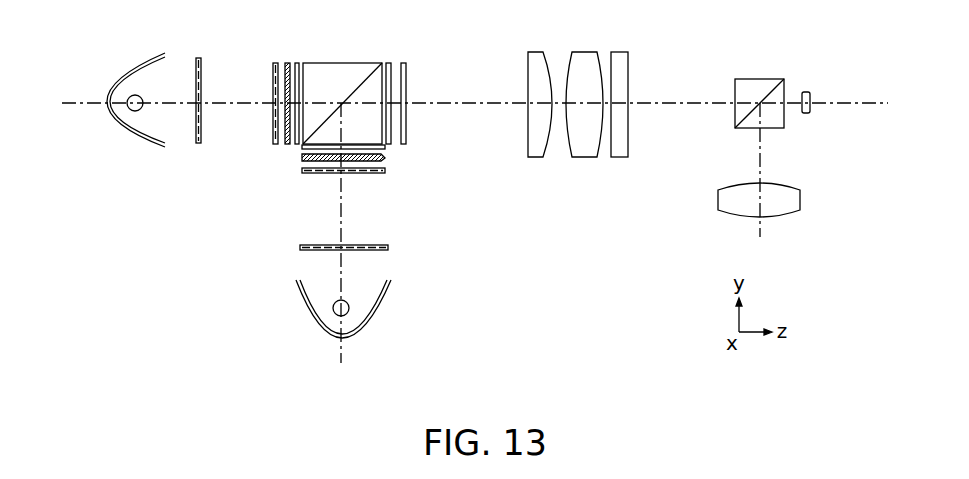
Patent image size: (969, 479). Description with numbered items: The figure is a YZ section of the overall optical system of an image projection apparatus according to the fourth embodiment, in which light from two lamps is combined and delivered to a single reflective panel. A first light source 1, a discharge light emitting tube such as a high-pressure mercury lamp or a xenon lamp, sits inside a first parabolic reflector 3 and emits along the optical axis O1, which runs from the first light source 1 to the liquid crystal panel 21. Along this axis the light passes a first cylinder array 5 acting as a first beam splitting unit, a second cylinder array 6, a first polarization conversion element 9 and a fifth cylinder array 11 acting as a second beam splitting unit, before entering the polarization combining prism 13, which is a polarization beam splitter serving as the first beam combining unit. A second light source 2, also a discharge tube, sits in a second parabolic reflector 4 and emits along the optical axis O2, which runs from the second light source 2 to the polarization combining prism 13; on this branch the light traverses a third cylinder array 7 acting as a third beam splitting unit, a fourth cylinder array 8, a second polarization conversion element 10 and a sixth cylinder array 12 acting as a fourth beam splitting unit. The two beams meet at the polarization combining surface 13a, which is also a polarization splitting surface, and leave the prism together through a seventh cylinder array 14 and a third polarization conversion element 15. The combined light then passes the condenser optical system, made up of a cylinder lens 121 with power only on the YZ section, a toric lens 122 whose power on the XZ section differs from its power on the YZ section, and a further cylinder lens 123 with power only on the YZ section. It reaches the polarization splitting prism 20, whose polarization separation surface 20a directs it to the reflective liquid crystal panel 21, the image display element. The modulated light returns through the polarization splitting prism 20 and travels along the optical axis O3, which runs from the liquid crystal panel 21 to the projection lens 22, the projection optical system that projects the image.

The first light source 1 is at (133, 111).
The second light source 2 is at (349, 309).
The first parabolic reflector 3 is at (160, 146).
The second parabolic reflector 4 is at (390, 290).
The first cylinder array 5 is at (198, 58).
The second cylinder array 6 is at (275, 63).
The third cylinder array 7 is at (388, 247).
The fourth cylinder array 8 is at (385, 171).
The first polarization conversion element 9 is at (287, 63).
The second polarization conversion element 10 is at (385, 158).
The fifth cylinder array 11 is at (297, 63).
The sixth cylinder array 12 is at (385, 147).
The polarization combining prism 13 is at (320, 63).
The polarization combining surface 13a is at (372, 73).
The seventh cylinder array 14 is at (390, 63).
The third polarization conversion element 15 is at (405, 63).
The polarization splitting prism 20 is at (742, 79).
The polarization separation surface 20a is at (772, 91).
The reflective liquid crystal panel 21 is at (805, 113).
The projection lens 22 is at (800, 198).
The cylinder lens 121 is at (535, 157).
The toric lens 122 is at (585, 157).
The cylinder lens 123 is at (618, 157).
The optical axis O1 is at (78, 102).
The optical axis O2 is at (343, 350).
The optical axis O3 is at (762, 232).